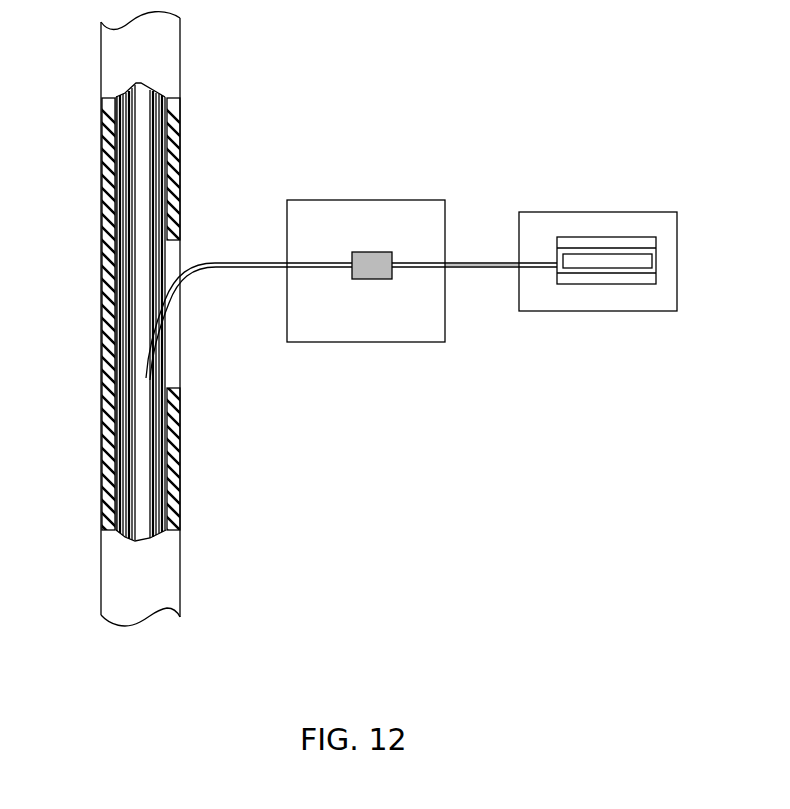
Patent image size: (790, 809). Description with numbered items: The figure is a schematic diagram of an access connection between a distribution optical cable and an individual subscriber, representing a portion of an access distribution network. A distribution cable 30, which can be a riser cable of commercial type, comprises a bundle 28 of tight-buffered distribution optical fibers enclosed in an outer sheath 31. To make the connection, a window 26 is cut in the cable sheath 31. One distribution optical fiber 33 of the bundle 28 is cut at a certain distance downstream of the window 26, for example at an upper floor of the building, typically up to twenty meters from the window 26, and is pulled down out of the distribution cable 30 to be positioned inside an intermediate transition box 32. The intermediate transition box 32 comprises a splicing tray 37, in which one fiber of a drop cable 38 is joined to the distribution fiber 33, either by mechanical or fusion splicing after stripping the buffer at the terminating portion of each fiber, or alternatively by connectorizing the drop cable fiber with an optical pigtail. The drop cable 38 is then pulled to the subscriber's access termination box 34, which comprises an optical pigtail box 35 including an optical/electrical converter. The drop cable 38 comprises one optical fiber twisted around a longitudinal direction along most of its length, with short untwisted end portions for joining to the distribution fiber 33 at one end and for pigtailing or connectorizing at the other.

The distribution cable 30 is at (198, 58).
The outer sheath 31 is at (108, 597).
The bundle of tight-buffered distribution optical fibers 28 is at (138, 487).
The window 26 is at (174, 370).
The distribution optical fiber 33 is at (212, 268).
The intermediate transition box 32 is at (302, 224).
The splicing tray 37 is at (378, 262).
The access termination box 34 is at (533, 225).
The optical pigtail box 35 is at (597, 285).
The drop cable 38 is at (495, 270).